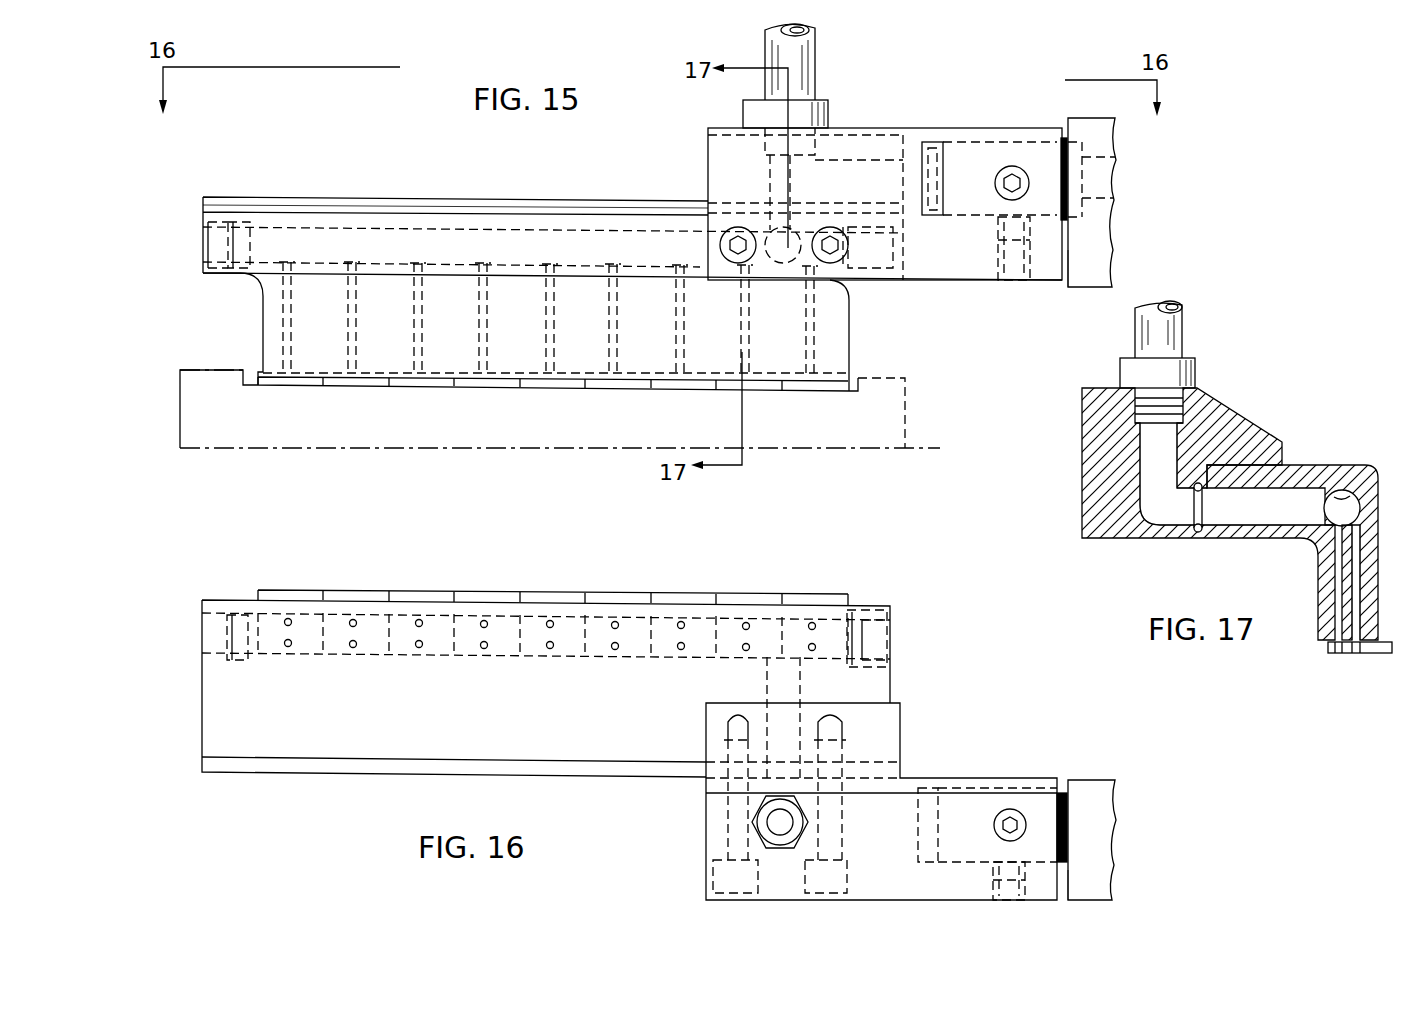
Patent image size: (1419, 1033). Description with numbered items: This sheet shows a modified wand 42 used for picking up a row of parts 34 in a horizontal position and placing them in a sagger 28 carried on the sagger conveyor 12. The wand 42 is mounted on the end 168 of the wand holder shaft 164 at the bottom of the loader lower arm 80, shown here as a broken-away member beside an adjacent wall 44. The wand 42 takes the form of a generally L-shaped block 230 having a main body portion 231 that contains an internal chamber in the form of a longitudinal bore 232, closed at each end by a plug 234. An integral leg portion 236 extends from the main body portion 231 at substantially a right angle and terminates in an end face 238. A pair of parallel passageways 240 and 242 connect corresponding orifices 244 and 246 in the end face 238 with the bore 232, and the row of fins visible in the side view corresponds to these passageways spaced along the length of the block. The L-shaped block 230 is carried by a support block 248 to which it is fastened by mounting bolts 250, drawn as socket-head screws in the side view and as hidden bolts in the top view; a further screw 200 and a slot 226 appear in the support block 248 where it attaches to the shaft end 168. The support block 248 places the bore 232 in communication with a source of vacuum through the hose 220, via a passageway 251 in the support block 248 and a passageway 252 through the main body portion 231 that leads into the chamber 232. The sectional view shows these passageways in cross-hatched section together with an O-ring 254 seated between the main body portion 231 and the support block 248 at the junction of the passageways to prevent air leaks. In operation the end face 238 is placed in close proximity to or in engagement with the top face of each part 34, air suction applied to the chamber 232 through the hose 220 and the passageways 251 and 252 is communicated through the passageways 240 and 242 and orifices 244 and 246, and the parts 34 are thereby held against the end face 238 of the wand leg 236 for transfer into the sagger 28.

In FIG. 15, the sagger conveyor 12 is at (262, 448).
In FIG. 15, the sagger 28 is at (178, 395).
In FIG. 15, the parts 34 is at (304, 388).
In FIG. 16, the parts 34 is at (312, 597).
In FIG. 17, the parts 34 is at (1392, 653).
In FIG. 15, the wand 42 is at (392, 200).
In FIG. 16, the wand 42 is at (338, 790).
In FIG. 17, the wand 42 is at (1120, 540).
In FIG. 15, the side wall 44 is at (1093, 118).
In FIG. 16, the side wall 44 is at (1093, 774).
In FIG. 15, the loader lower arm 80 is at (1105, 287).
In FIG. 16, the loader lower arm 80 is at (1100, 895).
In FIG. 15, the wand holder shaft 164 is at (1062, 132).
In FIG. 16, the wand holder shaft 164 is at (1062, 790).
In FIG. 15, the end of the wand holder shaft 168 is at (963, 140).
In FIG. 16, the end of the wand holder shaft 168 is at (965, 790).
In FIG. 15, the cap screw 200 is at (998, 191).
In FIG. 16, the cap screw 200 is at (996, 831).
In FIG. 15, the hose 220 is at (814, 62).
In FIG. 16, the hose 220 is at (755, 822).
In FIG. 17, the hose 220 is at (1185, 325).
In FIG. 16, the slot 226 is at (930, 788).
In FIG. 15, the L-shaped block 230 is at (582, 198).
In FIG. 16, the L-shaped block 230 is at (194, 690).
In FIG. 17, the L-shaped block 230 is at (1346, 460).
In FIG. 15, the main body portion 231 is at (312, 199).
In FIG. 16, the main body portion 231 is at (212, 732).
In FIG. 17, the main body portion 231 is at (1293, 465).
In FIG. 15, the longitudinal bore 232 is at (482, 228).
In FIG. 16, the longitudinal bore 232 is at (555, 660).
In FIG. 17, the longitudinal bore 232 is at (1348, 497).
In FIG. 15, the plug 234 is at (228, 272).
In FIG. 16, the plug 234 is at (222, 605).
In FIG. 17, the plug 234 is at (1345, 516).
In FIG. 15, the leg portion 236 is at (263, 340).
In FIG. 17, the leg portion 236 is at (1368, 620).
In FIG. 17, the end face 238 is at (1345, 655).
In FIG. 16, the passageway 240 is at (420, 612).
In FIG. 17, the passageway 240 is at (1357, 598).
In FIG. 15, the passageway 242 is at (549, 325).
In FIG. 16, the passageway 242 is at (420, 662).
In FIG. 17, the passageway 242 is at (1335, 575).
In FIG. 16, the orifice 244 is at (615, 620).
In FIG. 17, the orifice 244 is at (1357, 655).
In FIG. 16, the orifice 246 is at (615, 660).
In FIG. 17, the orifice 246 is at (1336, 655).
In FIG. 15, the support block 248 is at (860, 140).
In FIG. 16, the support block 248 is at (898, 895).
In FIG. 17, the support block 248 is at (1215, 412).
In FIG. 15, the mounting bolts 250 is at (730, 258).
In FIG. 16, the mounting bolts 250 is at (730, 846).
In FIG. 15, the passageway 251 is at (772, 181).
In FIG. 17, the passageway 251 is at (1150, 445).
In FIG. 16, the passageway 252 is at (790, 686).
In FIG. 17, the passageway 252 is at (1288, 515).
In FIG. 17, the O-ring 254 is at (1196, 540).